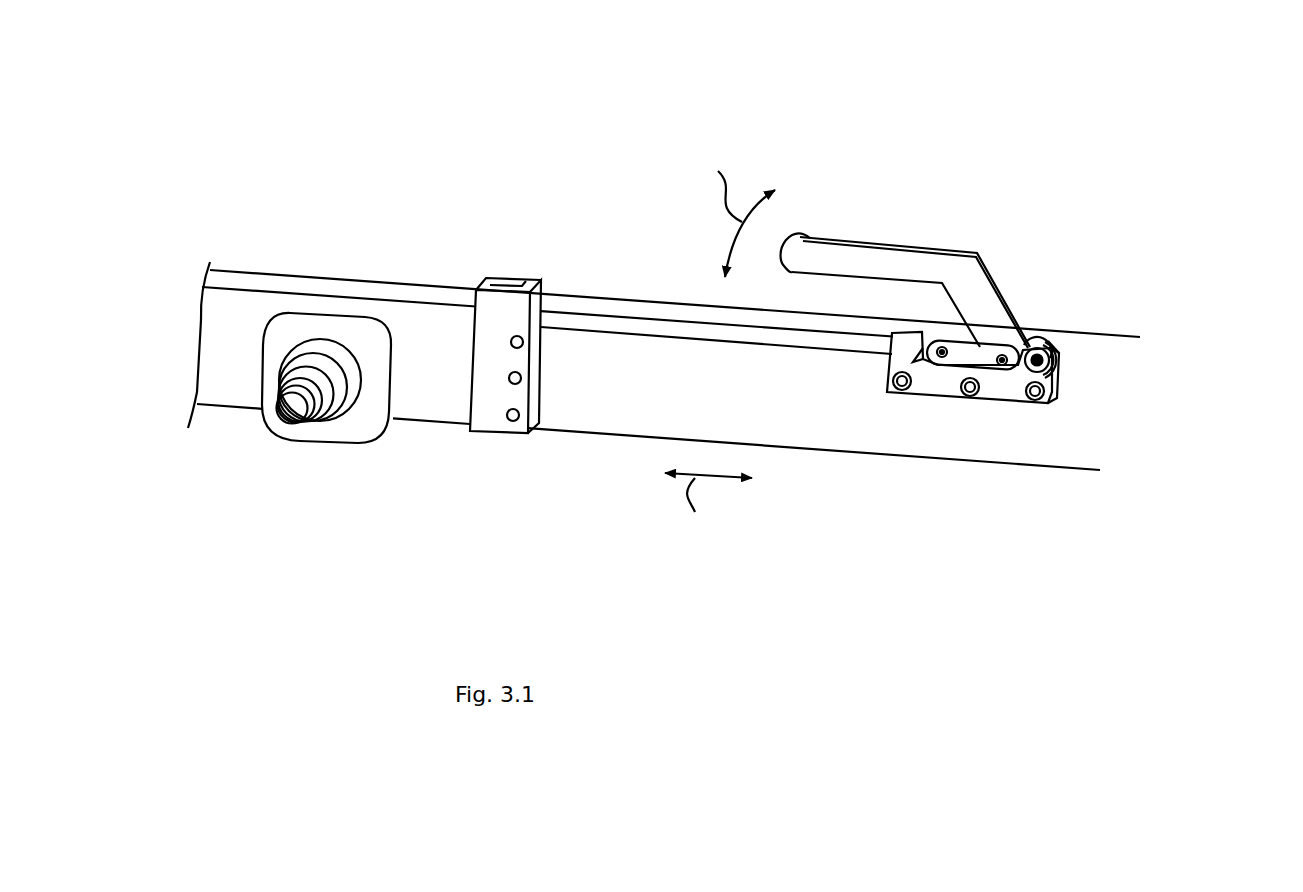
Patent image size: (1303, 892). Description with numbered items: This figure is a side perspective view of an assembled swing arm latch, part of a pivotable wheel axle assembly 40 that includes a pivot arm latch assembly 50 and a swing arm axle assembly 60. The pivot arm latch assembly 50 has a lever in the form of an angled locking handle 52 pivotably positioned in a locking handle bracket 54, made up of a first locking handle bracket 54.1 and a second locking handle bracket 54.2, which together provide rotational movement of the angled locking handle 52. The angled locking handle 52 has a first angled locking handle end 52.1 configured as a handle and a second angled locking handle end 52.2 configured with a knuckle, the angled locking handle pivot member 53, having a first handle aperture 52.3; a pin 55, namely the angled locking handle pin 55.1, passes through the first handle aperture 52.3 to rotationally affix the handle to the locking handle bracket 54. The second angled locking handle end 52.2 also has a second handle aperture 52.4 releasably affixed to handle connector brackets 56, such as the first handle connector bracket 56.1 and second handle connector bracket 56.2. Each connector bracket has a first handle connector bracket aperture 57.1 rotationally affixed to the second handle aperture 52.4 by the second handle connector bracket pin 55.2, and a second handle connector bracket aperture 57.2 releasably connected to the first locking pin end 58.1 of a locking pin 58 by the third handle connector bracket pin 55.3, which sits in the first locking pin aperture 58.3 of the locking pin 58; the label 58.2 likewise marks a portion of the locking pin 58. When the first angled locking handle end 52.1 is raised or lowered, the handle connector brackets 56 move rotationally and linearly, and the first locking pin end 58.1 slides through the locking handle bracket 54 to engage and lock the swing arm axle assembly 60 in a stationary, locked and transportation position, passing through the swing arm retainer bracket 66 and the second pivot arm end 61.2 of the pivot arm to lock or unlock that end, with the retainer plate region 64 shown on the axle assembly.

The pivotable wheel axle assembly 40 is at (540, 150).
The pivot arm latch assembly 50 is at (772, 161).
The angled locking handle 52 is at (922, 262).
The first angled locking handle end 52.1 is at (798, 236).
The second angled locking handle end 52.2 is at (1080, 313).
The first handle aperture 52.3 is at (1158, 378).
The second handle aperture 52.4 is at (1050, 433).
The angled locking handle pivot member 53 is at (1040, 320).
The locking handle bracket 54 is at (1089, 428).
The first locking handle bracket 54.1 is at (925, 383).
The second locking handle bracket 54.2 is at (1057, 342).
The pin 55 is at (1158, 378).
The angled locking handle pin 55.1 is at (1060, 352).
The second handle connector bracket pin 55.2 is at (1050, 433).
The third handle connector bracket pin 55.3 is at (943, 362).
The handle connector brackets 56 is at (990, 456).
The first handle connector bracket 56.1 is at (973, 358).
The second handle connector bracket 56.2 is at (947, 338).
The first handle connector bracket aperture 57.1 is at (1130, 328).
The second handle connector bracket aperture 57.2 is at (951, 452).
The locking pin 58 is at (680, 330).
The first locking pin end 58.1 is at (853, 345).
The rail upper portion 58.2 is at (570, 318).
The first locking pin aperture 58.3 is at (951, 452).
The swing arm axle assembly 60 is at (386, 248).
The second pivot arm end 61.2 is at (288, 283).
The mounting plate with cone 64 is at (284, 448).
The swing arm retainer bracket 66 is at (490, 413).